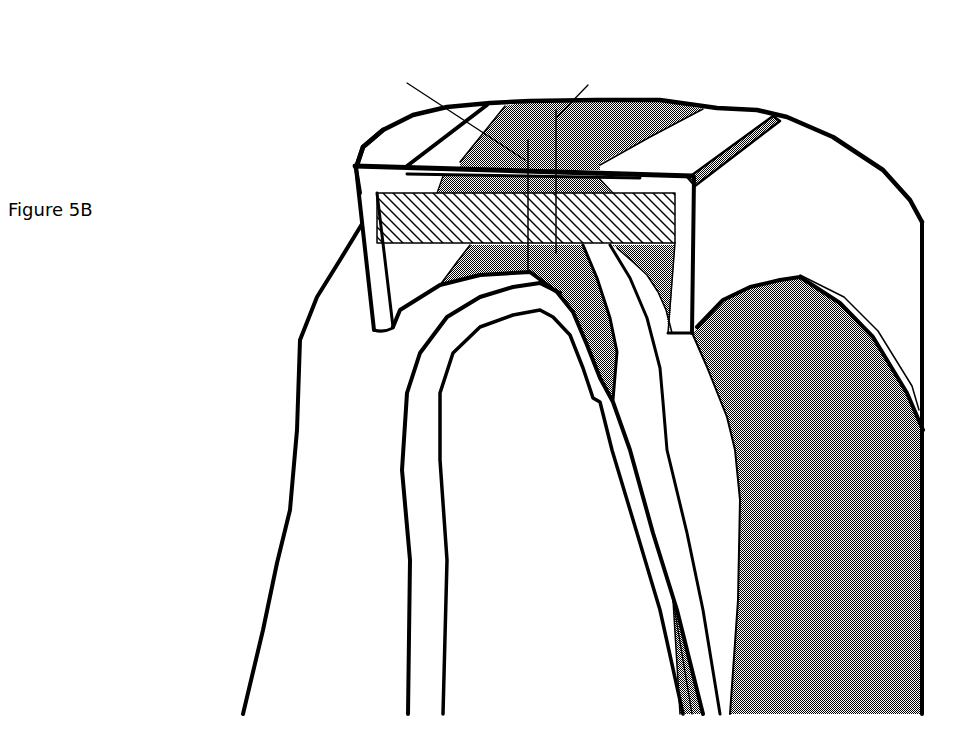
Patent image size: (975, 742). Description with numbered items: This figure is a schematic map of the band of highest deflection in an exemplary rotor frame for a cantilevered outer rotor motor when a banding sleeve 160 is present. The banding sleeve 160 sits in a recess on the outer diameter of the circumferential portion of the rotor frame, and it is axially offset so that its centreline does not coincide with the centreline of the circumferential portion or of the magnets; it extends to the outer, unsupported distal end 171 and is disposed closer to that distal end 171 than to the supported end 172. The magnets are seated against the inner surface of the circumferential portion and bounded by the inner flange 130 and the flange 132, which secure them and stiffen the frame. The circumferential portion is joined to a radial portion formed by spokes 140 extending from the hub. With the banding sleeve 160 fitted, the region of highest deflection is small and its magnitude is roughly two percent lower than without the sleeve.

The inner flange 130 is at (372, 218).
The flange 132 is at (680, 287).
The spokes 140 is at (296, 545).
The banding sleeve 160 is at (738, 128).
The distal end 171 is at (695, 203).
The supported end 172 is at (353, 171).